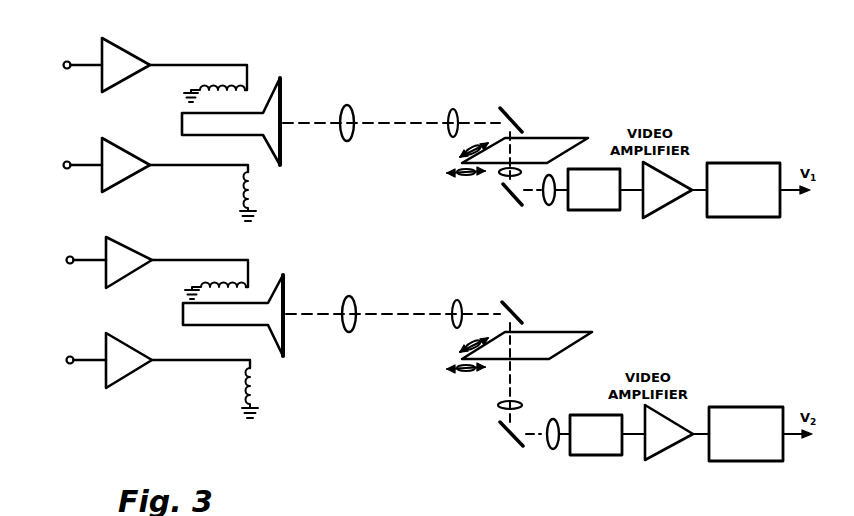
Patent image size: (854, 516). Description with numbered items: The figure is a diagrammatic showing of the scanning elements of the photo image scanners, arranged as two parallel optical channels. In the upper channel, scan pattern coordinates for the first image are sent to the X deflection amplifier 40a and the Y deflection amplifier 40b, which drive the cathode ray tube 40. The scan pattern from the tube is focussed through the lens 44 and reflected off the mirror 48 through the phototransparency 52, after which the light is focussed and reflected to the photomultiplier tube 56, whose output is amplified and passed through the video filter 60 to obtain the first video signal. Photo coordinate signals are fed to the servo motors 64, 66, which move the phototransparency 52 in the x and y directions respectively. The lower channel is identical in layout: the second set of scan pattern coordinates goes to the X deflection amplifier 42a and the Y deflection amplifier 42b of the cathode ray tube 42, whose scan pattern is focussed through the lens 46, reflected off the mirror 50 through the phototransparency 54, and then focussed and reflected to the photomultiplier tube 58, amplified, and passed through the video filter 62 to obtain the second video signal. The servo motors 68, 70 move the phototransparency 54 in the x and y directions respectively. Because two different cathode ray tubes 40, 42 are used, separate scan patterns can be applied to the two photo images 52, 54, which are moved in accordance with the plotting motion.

The X deflection amplifier 40a is at (147, 57).
The Y deflection amplifier 40b is at (147, 157).
The cathode ray tube 40 is at (285, 92).
The lens 44 is at (357, 113).
The mirror 48 is at (507, 108).
The phototransparency 52 is at (583, 138).
The photomultiplier tube 56 is at (601, 210).
The video filter 60 is at (741, 163).
The servo motor 64 is at (477, 176).
The servo motor 66 is at (470, 147).
The X deflection amplifier 42a is at (148, 252).
The Y deflection amplifier 42b is at (148, 352).
The cathode ray tube 42 is at (285, 288).
The lens 46 is at (358, 308).
The mirror 50 is at (511, 302).
The phototransparency 54 is at (590, 332).
The photomultiplier tube 58 is at (585, 415).
The video filter 62 is at (745, 407).
The servo motor 68 is at (472, 372).
The servo motor 70 is at (470, 342).